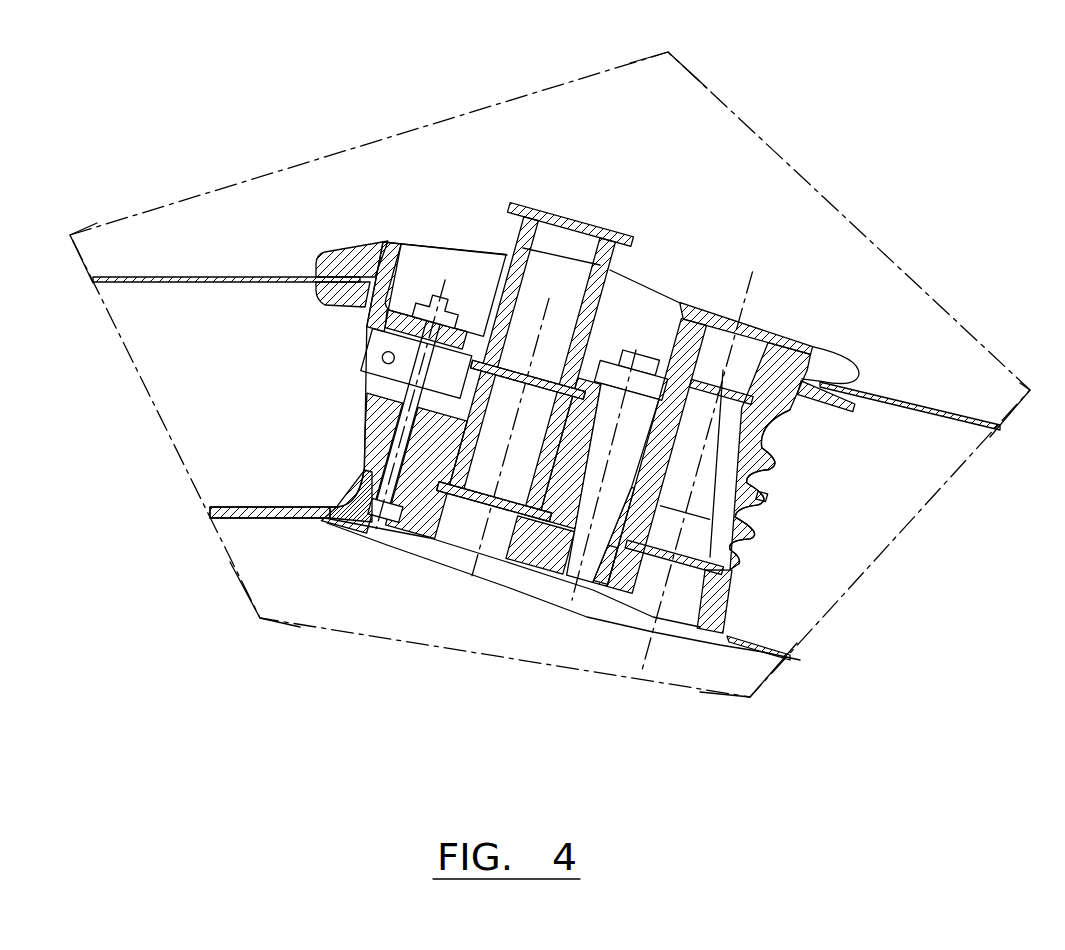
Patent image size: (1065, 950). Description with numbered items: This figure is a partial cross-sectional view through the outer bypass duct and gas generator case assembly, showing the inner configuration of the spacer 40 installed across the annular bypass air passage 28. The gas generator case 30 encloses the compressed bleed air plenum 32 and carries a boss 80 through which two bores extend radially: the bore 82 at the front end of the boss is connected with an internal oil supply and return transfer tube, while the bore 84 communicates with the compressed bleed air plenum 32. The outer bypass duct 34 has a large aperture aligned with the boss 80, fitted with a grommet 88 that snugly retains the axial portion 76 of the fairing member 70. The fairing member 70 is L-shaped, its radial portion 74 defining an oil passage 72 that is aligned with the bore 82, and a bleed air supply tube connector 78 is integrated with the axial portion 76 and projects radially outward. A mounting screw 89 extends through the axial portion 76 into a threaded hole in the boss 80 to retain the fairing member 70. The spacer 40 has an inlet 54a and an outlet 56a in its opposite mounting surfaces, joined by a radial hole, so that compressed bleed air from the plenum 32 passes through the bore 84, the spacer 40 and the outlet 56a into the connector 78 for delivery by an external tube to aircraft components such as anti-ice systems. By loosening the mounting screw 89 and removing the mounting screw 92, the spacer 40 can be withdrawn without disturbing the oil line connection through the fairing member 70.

The annular bypass air passage 28 is at (265, 489).
The gas generator case 30 is at (263, 508).
The compressed bleed air plenum 32 is at (600, 660).
The outer bypass duct 34 is at (210, 276).
The spacer 40 is at (400, 507).
The inlet 54a is at (525, 470).
The outlet 56a is at (512, 372).
The fairing member 70 is at (763, 457).
The oil passage 72 is at (720, 425).
The radial portion 74 is at (750, 493).
The axial portion 76 is at (419, 250).
The bleed air supply tube connector 78 is at (585, 240).
The boss 80 is at (733, 597).
The bore 82 is at (682, 560).
The bore 84 is at (465, 520).
The grommet 88 is at (852, 365).
The mounting screw 89 is at (631, 395).
The mounting screw 92 is at (418, 430).